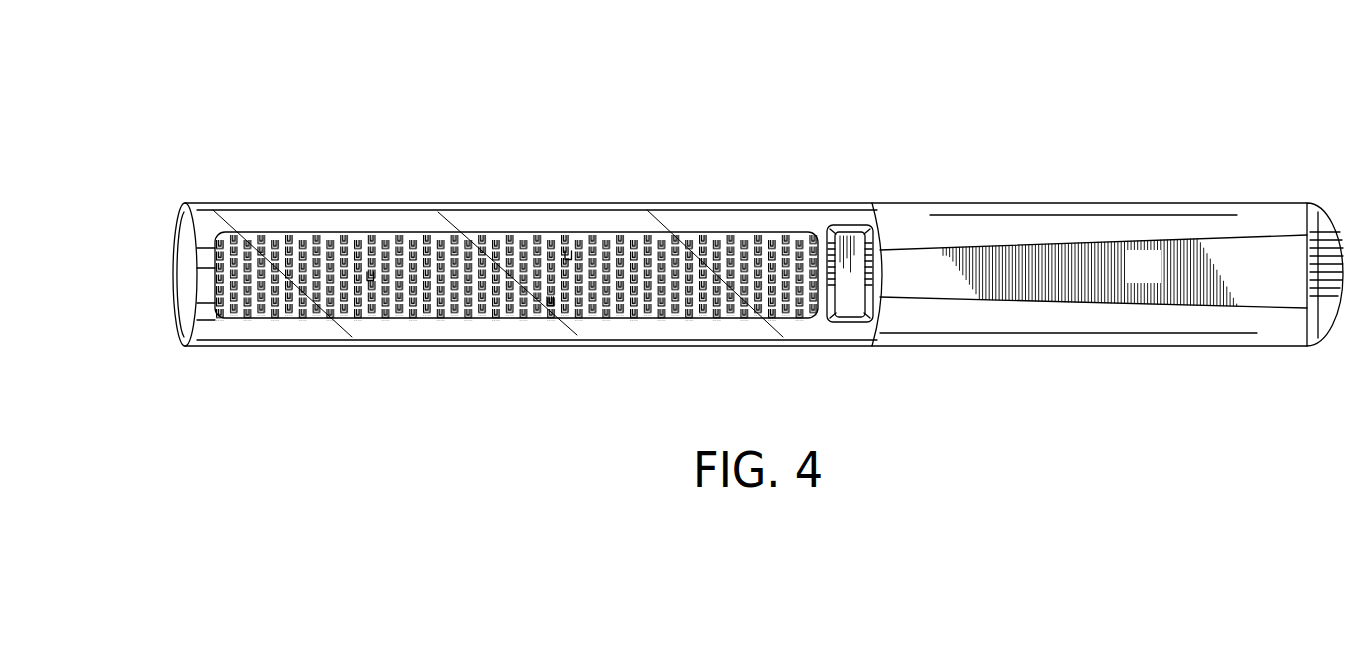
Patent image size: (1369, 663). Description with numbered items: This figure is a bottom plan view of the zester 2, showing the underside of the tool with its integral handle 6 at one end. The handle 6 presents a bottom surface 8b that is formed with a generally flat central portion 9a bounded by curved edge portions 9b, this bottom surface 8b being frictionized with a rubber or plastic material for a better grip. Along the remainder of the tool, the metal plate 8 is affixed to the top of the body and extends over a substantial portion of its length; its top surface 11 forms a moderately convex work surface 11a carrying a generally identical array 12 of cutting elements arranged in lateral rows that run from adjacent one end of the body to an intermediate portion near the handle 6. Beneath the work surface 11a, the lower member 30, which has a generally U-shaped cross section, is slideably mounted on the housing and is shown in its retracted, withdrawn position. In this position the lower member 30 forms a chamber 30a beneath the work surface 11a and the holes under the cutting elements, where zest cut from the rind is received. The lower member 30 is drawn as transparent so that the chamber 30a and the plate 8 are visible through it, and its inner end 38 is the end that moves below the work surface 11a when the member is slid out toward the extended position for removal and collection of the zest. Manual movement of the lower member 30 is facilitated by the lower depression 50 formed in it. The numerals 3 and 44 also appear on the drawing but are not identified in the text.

The zester 2 is at (741, 168).
The perforated panel 3 is at (403, 235).
The handle 6 is at (1018, 230).
The metal plate 8 is at (285, 258).
The bottom surface 8b is at (1268, 258).
The flat central portion 9a is at (1158, 279).
The curved edge portions 9b is at (1148, 210).
The top surface 11 is at (488, 233).
The work surface 11a is at (548, 305).
The array of cutting elements 12 is at (632, 240).
The lower member 30 is at (566, 252).
The chamber 30a is at (370, 272).
The inner end 38 is at (846, 305).
The mouthpiece end cap 44 is at (210, 290).
The lower depression 50 is at (848, 238).